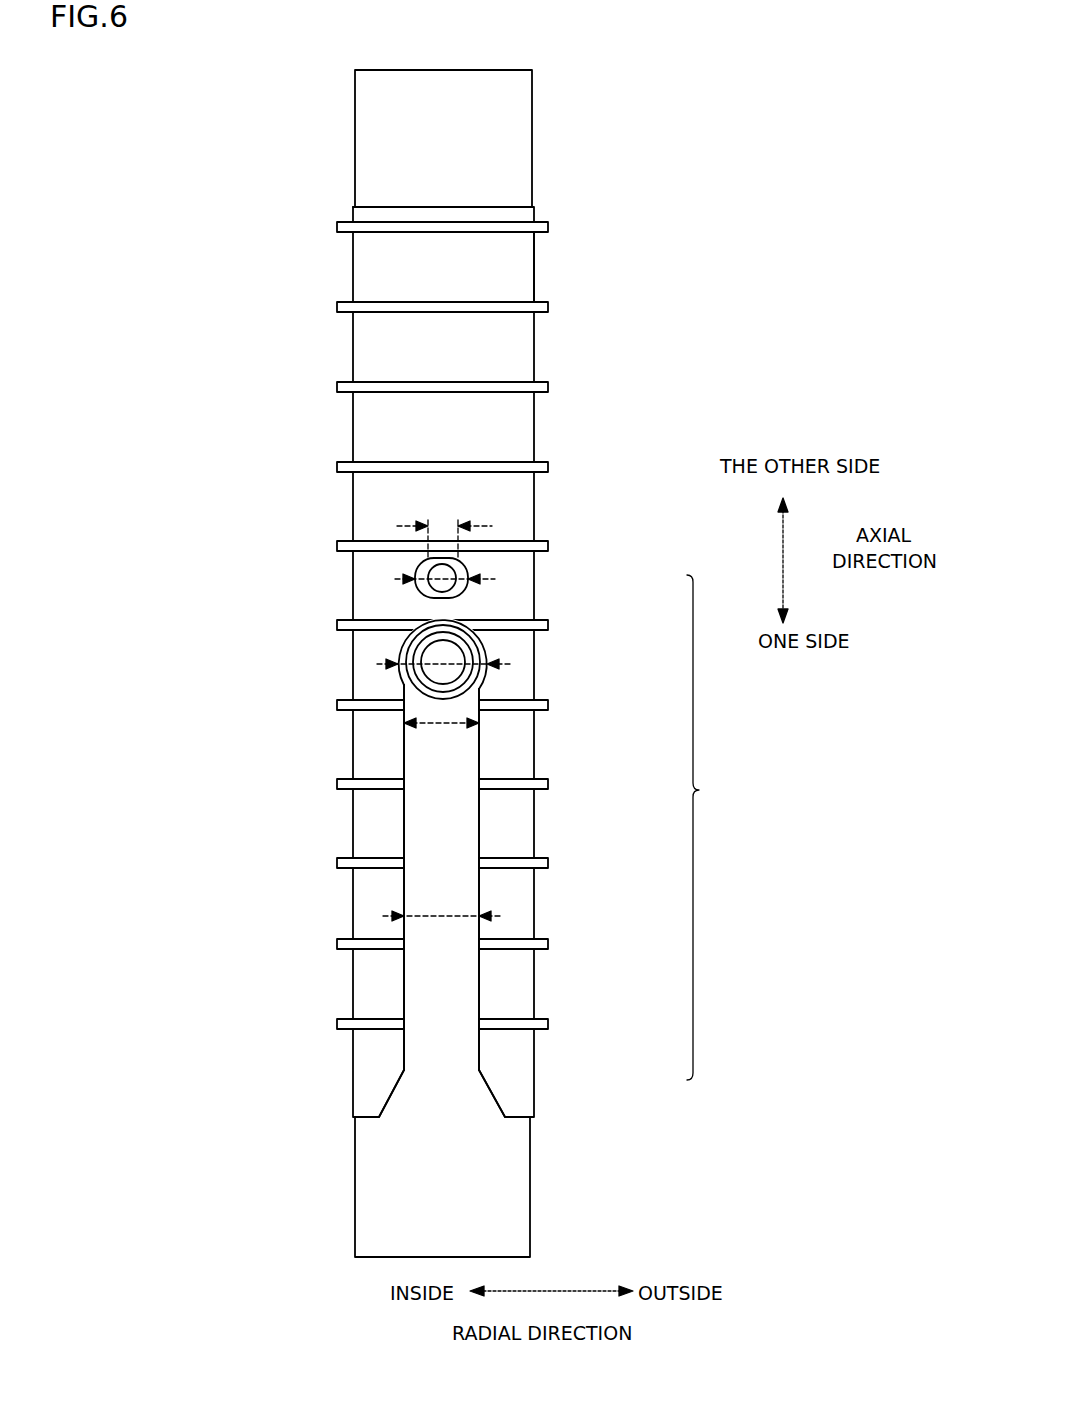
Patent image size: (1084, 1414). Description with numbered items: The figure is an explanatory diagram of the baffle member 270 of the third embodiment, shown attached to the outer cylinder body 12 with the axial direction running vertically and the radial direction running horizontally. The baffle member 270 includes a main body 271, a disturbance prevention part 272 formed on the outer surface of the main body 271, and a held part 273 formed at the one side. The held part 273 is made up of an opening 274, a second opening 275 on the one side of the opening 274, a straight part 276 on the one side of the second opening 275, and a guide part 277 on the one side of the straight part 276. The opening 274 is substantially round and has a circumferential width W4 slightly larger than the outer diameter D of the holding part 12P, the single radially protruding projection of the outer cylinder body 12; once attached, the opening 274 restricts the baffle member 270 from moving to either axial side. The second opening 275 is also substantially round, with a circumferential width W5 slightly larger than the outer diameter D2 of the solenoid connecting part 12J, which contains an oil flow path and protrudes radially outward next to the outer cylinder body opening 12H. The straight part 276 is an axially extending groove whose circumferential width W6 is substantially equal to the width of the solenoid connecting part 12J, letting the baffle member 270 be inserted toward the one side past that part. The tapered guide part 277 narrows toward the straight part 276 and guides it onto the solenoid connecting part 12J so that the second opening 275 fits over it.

The outer cylinder body 12 is at (355, 124).
The holding part 12P is at (432, 574).
The outer cylinder body opening 12H is at (425, 674).
The solenoid connecting part 12J is at (428, 706).
The baffle member 270 is at (548, 212).
The main body 271 is at (536, 272).
The disturbance prevention part 272 is at (551, 381).
The held part 273 is at (721, 827).
The opening 274 is at (470, 571).
The second opening 275 is at (483, 638).
The straight part 276 is at (476, 826).
The guide part 277 is at (490, 1098).
The outer diameter of the holding part D is at (444, 524).
The outer diameter of the solenoid connecting part D2 is at (441, 738).
The circumferential width of the opening W4 is at (430, 591).
The circumferential width of the second opening W5 is at (433, 651).
The circumferential width of the straight part W6 is at (457, 902).